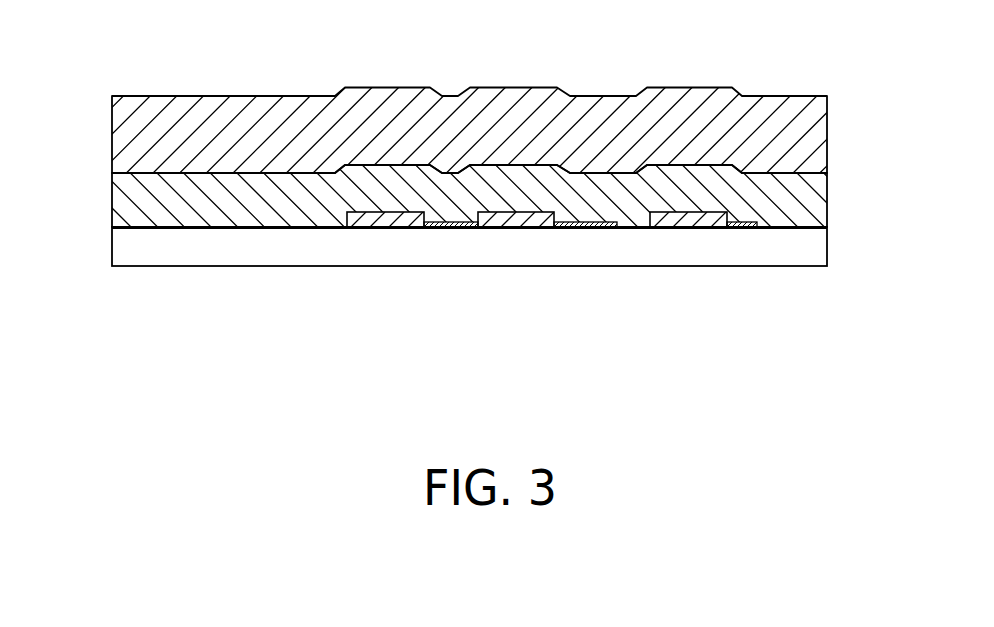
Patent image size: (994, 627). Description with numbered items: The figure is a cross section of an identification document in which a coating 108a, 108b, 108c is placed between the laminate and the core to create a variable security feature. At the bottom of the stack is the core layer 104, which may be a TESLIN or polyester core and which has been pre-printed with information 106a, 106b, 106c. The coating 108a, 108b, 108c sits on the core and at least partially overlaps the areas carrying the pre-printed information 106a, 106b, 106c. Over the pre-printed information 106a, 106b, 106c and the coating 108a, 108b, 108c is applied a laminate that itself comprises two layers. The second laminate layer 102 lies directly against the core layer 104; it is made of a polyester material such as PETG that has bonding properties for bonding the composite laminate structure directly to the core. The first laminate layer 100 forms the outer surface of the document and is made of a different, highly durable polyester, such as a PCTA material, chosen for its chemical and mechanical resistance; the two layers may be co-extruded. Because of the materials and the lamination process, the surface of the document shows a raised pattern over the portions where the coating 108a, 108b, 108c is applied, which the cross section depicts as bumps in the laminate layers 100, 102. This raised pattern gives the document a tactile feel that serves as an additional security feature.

The first laminate layer 100 is at (125, 127).
The second laminate layer 102 is at (812, 182).
The core layer 104 is at (812, 240).
The pre-printed information 106a is at (438, 222).
The pre-printed information 106b is at (573, 224).
The pre-printed information 106c is at (740, 225).
The coating 108a is at (372, 220).
The coating 108b is at (510, 220).
The coating 108c is at (668, 222).